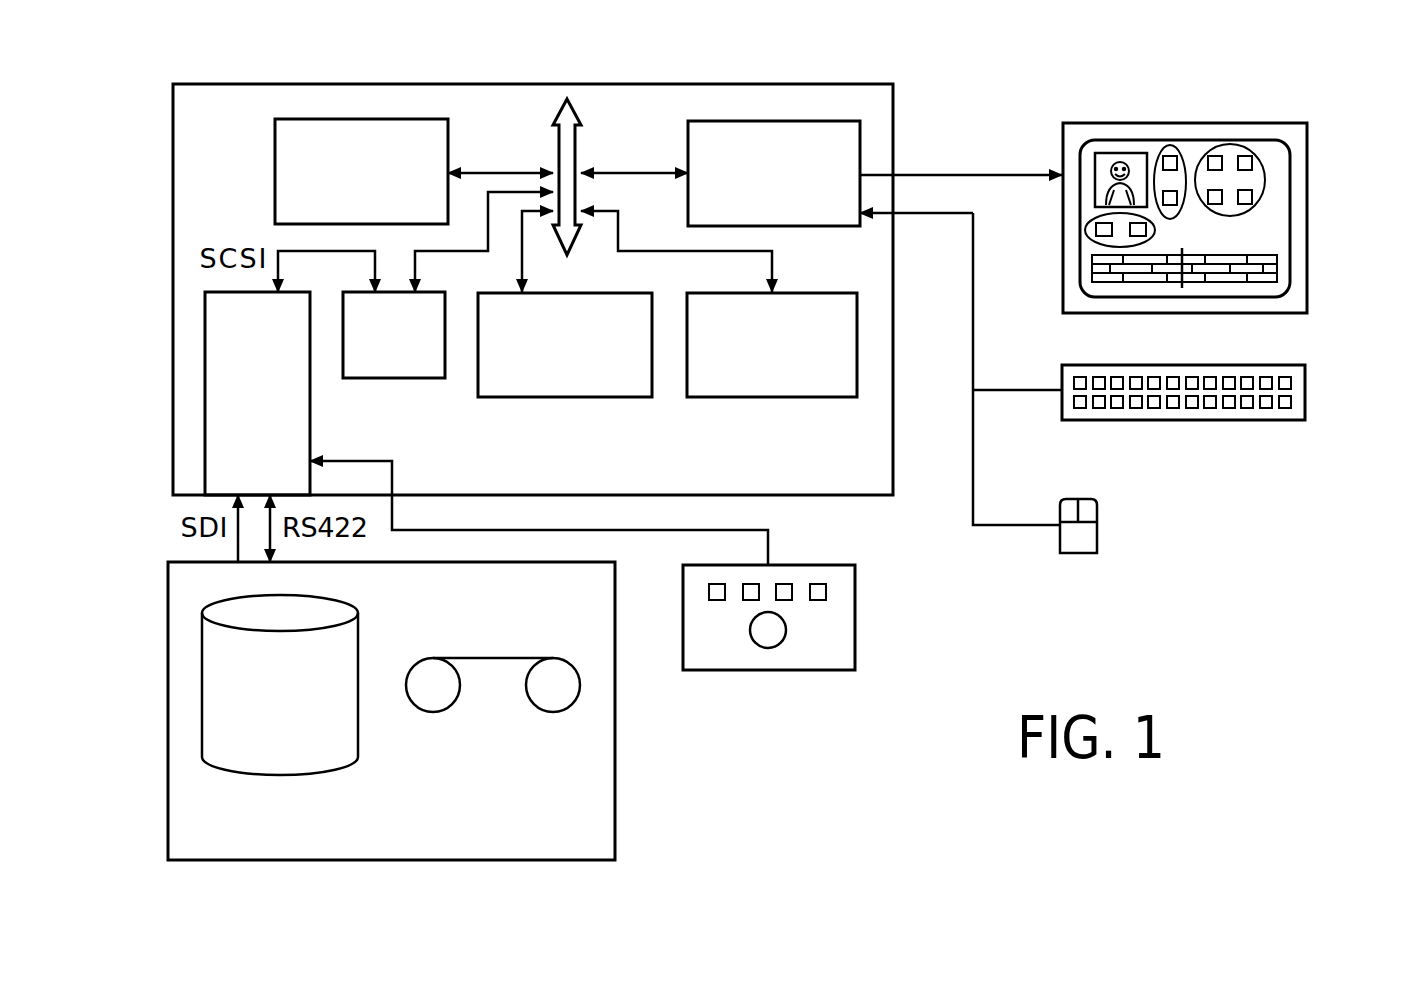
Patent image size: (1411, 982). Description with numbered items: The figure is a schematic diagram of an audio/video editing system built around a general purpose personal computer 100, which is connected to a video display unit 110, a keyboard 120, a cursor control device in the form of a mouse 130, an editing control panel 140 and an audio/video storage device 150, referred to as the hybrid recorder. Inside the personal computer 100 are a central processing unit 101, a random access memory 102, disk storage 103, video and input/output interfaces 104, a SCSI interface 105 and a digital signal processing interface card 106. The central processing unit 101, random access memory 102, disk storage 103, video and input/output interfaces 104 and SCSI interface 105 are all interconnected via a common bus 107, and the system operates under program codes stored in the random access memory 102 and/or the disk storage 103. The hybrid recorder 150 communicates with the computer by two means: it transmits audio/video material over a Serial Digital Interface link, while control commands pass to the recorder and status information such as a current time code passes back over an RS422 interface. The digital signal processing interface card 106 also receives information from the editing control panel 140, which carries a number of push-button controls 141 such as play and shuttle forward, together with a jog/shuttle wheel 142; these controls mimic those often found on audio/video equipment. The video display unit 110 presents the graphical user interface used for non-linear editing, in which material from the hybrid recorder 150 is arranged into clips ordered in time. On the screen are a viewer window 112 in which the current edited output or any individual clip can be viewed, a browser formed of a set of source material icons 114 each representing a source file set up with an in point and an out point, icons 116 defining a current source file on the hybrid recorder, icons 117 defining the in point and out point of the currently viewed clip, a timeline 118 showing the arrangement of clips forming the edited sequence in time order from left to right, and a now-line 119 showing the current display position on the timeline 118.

The general purpose personal computer 100 is at (893, 118).
The central processing unit 101 is at (332, 119).
The random access memory 102 is at (617, 397).
The disk storage 103 is at (826, 397).
The video and input/output interfaces 104 is at (792, 121).
The SCSI interface 105 is at (403, 378).
The digital signal processing interface card 106 is at (205, 310).
The common bus 107 is at (577, 140).
The video display unit 110 is at (1262, 123).
The viewer window 112 is at (1108, 153).
The source material icons 114 is at (1265, 178).
The icons defining a current source file 116 is at (1095, 243).
The icons defining an in point and out point 117 is at (1162, 150).
The timeline 118 is at (1277, 271).
The now-line 119 is at (1182, 288).
The keyboard 120 is at (1265, 420).
The mouse 130 is at (1097, 530).
The editing control panel 140 is at (855, 643).
The push-button controls 141 is at (820, 584).
The jog/shuttle wheel 142 is at (786, 634).
The audio/video storage device 150 is at (618, 823).